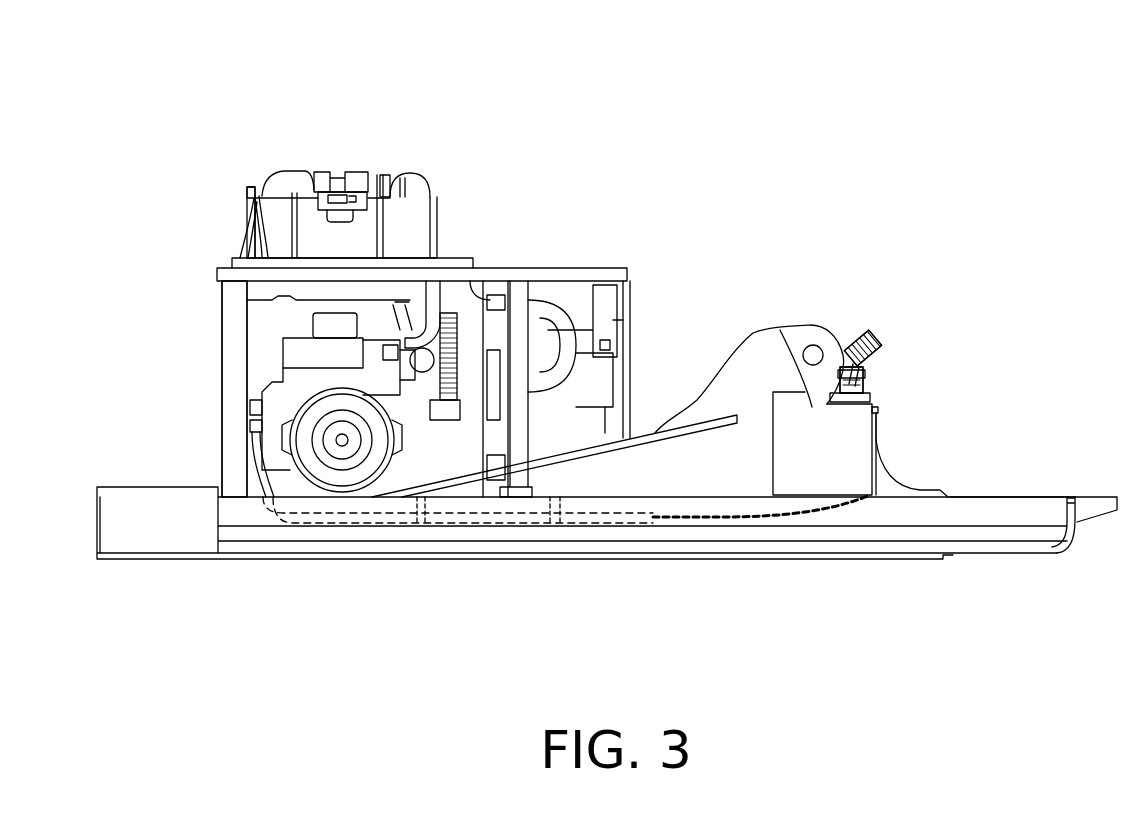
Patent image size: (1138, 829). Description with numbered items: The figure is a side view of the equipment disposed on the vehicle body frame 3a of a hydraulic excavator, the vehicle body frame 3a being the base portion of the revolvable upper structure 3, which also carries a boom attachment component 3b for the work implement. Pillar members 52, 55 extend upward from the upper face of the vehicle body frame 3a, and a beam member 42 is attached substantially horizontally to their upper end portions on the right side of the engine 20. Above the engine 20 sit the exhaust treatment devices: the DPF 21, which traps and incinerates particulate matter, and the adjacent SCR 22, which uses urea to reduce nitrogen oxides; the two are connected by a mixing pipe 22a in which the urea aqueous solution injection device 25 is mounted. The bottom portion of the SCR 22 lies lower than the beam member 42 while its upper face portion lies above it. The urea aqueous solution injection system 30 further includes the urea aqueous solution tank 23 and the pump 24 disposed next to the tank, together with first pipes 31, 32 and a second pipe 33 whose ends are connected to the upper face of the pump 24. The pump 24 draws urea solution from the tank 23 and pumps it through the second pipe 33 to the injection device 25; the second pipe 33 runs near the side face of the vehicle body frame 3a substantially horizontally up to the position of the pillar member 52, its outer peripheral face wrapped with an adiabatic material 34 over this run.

The upper structure 3 is at (170, 160).
The vehicle body frame 3a is at (1020, 505).
The boom attachment component 3b is at (822, 320).
The engine 20 is at (283, 392).
The DPF 21 is at (253, 185).
The SCR 22 is at (430, 193).
The mixing pipe 22a is at (307, 182).
The urea aqueous solution tank 23 is at (880, 423).
The pump 24 is at (810, 413).
The urea aqueous solution injection device 25 is at (238, 196).
The urea aqueous solution injection system 30 is at (932, 286).
The first pipe 31 is at (828, 383).
The first pipe 32 is at (879, 324).
The second pipe 33 is at (880, 450).
The adiabatic material 34 is at (240, 247).
The beam member 42 is at (440, 277).
The pillar member 52 is at (232, 330).
The pillar member 55 is at (487, 305).